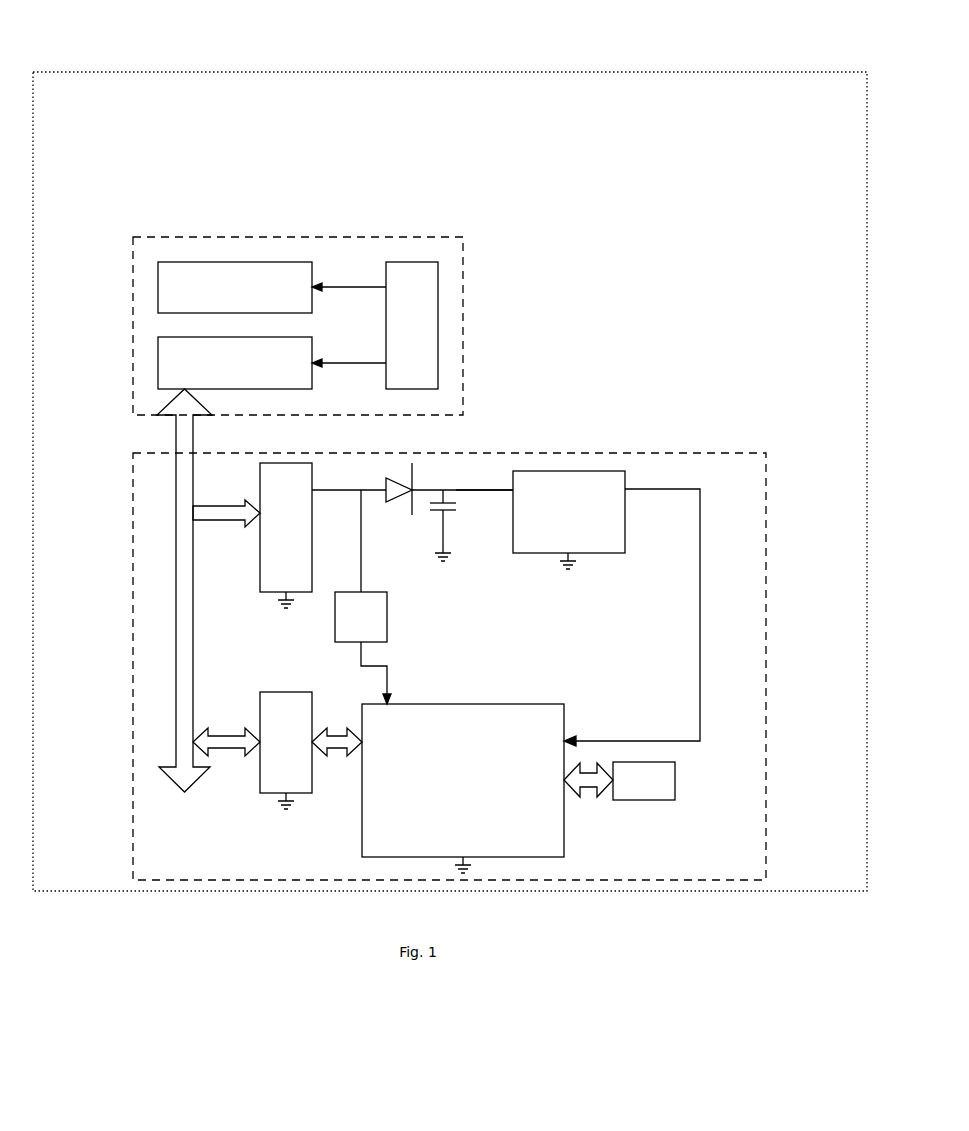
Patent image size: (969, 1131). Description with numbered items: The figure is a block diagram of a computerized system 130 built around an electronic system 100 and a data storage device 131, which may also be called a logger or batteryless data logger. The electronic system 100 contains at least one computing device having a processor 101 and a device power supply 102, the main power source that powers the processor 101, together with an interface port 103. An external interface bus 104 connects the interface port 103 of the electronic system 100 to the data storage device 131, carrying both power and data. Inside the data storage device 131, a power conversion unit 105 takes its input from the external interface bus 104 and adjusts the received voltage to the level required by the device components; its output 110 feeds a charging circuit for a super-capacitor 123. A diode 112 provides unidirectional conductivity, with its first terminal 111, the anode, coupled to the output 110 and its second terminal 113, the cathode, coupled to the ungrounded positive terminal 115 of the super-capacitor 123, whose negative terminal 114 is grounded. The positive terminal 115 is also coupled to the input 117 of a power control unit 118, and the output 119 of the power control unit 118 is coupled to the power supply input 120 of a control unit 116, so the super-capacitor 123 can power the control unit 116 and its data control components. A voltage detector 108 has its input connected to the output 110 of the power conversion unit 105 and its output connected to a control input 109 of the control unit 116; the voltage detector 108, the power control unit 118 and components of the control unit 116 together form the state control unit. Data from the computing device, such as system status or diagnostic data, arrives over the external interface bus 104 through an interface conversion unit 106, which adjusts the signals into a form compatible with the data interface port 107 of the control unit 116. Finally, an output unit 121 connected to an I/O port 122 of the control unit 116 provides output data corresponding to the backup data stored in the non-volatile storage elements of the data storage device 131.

The electronic system 100 is at (313, 237).
The processor 101 is at (235, 287).
The device power supply 102 is at (375, 325).
The interface port 103 is at (235, 363).
The external interface bus 104 is at (195, 437).
The power conversion unit 105 is at (286, 535).
The interface conversion unit 106 is at (286, 750).
The data interface port 107 is at (356, 754).
The voltage detector 108 is at (361, 617).
The control input 109 is at (370, 697).
The output of the power conversion unit 110 is at (312, 490).
The first terminal 111 is at (378, 485).
The diode 112 is at (398, 470).
The second terminal 113 is at (416, 485).
The negative terminal 114 is at (440, 507).
The positive terminal 115 is at (458, 490).
The control unit 116 is at (463, 788).
The input of the power control unit 117 is at (510, 490).
The power control unit 118 is at (569, 520).
The output of the power control unit 119 is at (625, 490).
The power supply input 120 is at (567, 738).
The output unit 121 is at (644, 781).
The I/O port 122 is at (570, 793).
The super-capacitor 123 is at (457, 511).
The computerized system 130 is at (478, 72).
The data storage device 131 is at (565, 453).